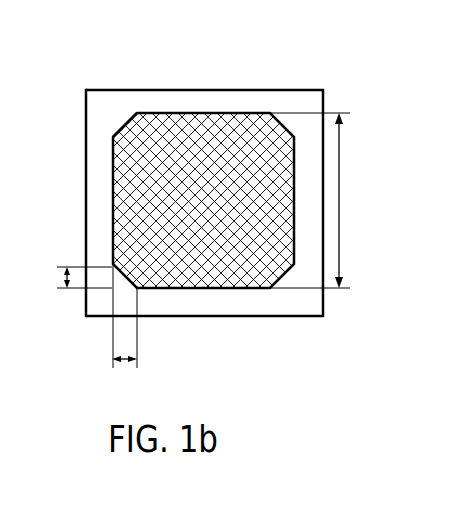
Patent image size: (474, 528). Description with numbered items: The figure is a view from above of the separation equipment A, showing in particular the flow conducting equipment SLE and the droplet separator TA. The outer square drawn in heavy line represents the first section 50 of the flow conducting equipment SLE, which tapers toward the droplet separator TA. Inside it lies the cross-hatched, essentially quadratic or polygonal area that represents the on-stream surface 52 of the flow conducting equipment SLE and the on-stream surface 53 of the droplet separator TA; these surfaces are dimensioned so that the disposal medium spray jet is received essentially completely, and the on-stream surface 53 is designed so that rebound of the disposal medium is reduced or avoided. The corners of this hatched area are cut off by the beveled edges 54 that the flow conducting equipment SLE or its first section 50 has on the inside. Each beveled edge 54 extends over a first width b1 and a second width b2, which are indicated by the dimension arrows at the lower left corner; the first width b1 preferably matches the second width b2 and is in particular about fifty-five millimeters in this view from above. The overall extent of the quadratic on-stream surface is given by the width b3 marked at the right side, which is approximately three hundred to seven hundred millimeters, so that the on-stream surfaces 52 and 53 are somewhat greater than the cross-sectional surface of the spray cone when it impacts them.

The separation equipment A is at (119, 72).
The first section 50 is at (225, 100).
The on-stream surface of the flow conducting equipment 52 is at (133, 215).
The on-stream surface of the droplet separator 53 is at (153, 182).
The beveled edges 54 is at (123, 127).
The droplet separator TA is at (123, 152).
The flow conducting equipment SLE is at (97, 240).
The first width b1 is at (125, 325).
The second width b2 is at (74, 278).
The width of the quadratic on-stream surface b3 is at (320, 200).